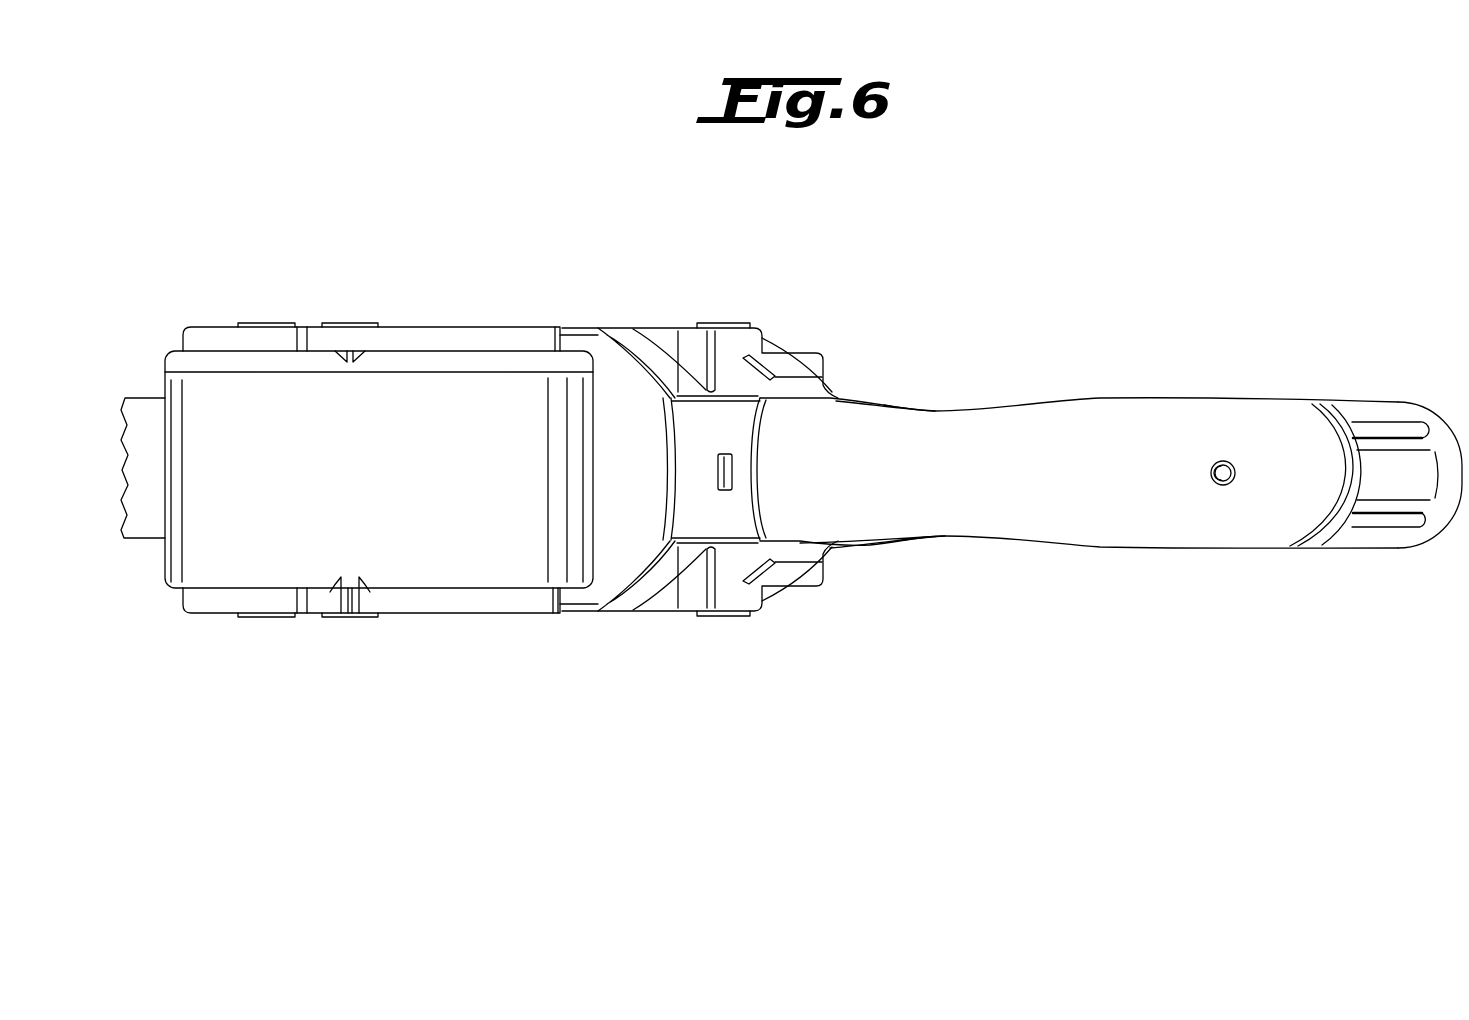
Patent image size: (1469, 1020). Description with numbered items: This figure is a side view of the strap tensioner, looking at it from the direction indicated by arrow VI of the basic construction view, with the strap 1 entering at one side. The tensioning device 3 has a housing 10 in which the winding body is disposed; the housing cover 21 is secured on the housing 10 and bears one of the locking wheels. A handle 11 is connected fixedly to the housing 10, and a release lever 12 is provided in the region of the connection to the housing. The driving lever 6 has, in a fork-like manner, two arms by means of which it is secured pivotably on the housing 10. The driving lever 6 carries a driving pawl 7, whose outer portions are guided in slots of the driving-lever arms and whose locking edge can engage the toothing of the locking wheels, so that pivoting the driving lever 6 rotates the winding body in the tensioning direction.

The tool shaft 1 is at (144, 408).
The tensioning device 3 is at (270, 555).
The driving lever 6 is at (1172, 515).
The driving pawl 7 is at (724, 470).
The housing 10 is at (450, 568).
The handle 11 is at (1363, 408).
The release lever 12 is at (627, 347).
The housing cover 21 is at (198, 360).